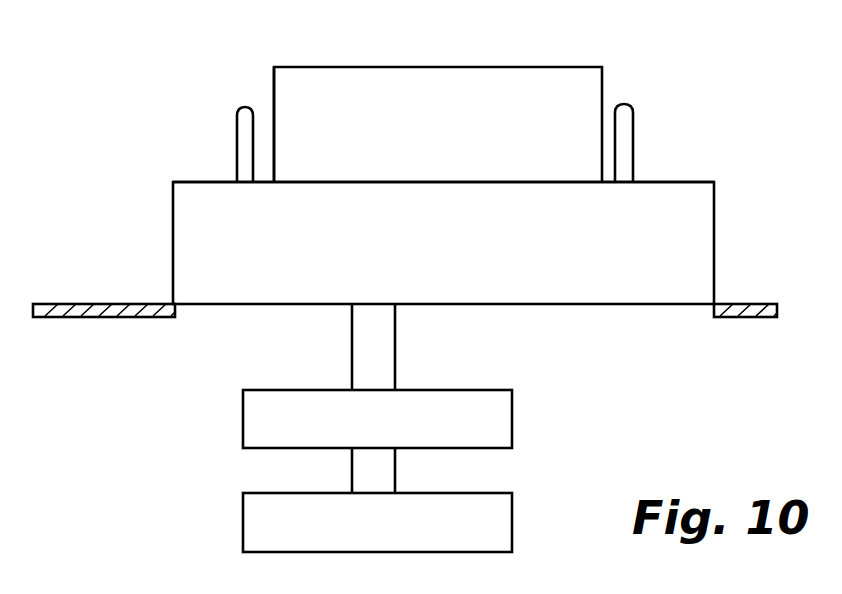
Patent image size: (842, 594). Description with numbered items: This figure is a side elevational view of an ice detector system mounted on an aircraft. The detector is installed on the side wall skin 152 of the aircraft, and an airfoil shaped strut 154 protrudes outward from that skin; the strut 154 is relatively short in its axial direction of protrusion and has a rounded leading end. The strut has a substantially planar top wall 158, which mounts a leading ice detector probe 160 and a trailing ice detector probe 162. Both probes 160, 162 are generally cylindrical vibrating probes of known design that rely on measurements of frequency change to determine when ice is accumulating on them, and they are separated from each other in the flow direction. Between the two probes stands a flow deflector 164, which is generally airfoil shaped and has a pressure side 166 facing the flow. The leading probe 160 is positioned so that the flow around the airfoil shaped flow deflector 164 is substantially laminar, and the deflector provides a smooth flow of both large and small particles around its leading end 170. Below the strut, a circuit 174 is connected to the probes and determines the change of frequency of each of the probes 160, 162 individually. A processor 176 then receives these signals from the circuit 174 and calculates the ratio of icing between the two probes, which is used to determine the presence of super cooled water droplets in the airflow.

The side wall skin 152 is at (105, 303).
The airfoil shaped strut 154 is at (693, 214).
The top wall 158 is at (648, 181).
The leading ice detector probe 160 is at (240, 128).
The trailing ice detector probe 162 is at (628, 126).
The flow deflector 164 is at (440, 86).
The pressure side 166 is at (352, 163).
The leading end 170 is at (280, 88).
The circuit 174 is at (256, 412).
The processor 176 is at (256, 516).